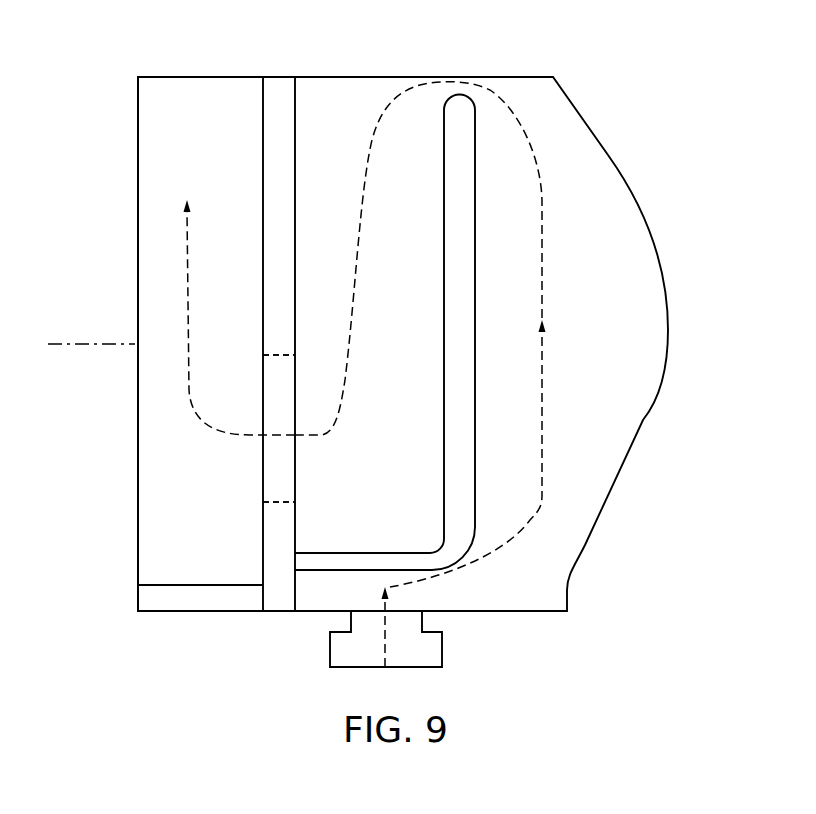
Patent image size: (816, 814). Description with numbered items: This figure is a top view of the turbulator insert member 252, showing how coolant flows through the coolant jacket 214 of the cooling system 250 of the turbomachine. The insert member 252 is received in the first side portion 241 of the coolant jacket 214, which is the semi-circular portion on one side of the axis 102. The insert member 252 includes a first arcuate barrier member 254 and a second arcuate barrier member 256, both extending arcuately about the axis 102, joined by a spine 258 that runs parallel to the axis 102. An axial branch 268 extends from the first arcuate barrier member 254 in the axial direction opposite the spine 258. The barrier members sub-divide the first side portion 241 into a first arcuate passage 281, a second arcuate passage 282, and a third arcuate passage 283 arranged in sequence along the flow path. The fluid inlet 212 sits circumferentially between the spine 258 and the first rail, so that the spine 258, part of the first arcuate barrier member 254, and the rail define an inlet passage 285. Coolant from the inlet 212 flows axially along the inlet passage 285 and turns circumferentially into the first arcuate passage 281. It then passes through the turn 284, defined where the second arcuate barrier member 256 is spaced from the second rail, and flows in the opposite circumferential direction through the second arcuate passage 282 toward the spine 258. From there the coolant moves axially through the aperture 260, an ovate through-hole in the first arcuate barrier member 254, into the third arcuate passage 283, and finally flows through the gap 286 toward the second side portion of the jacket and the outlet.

The axis 102 is at (73, 343).
The fluid inlet 212 is at (430, 648).
The coolant jacket 214 is at (205, 77).
The first side portion 241 is at (150, 190).
The cooling system 250 is at (135, 532).
The turbulator insert member 252 is at (275, 464).
The first arcuate barrier member 254 is at (285, 150).
The second arcuate barrier member 256 is at (455, 270).
The spine 258 is at (355, 553).
The aperture 260 is at (275, 393).
The axial branch 268 is at (170, 585).
The first arcuate passage 281 is at (636, 337).
The second arcuate passage 282 is at (420, 337).
The third arcuate passage 283 is at (248, 337).
The turn 284 is at (470, 77).
The inlet passage 285 is at (313, 611).
The gap 286 is at (152, 88).